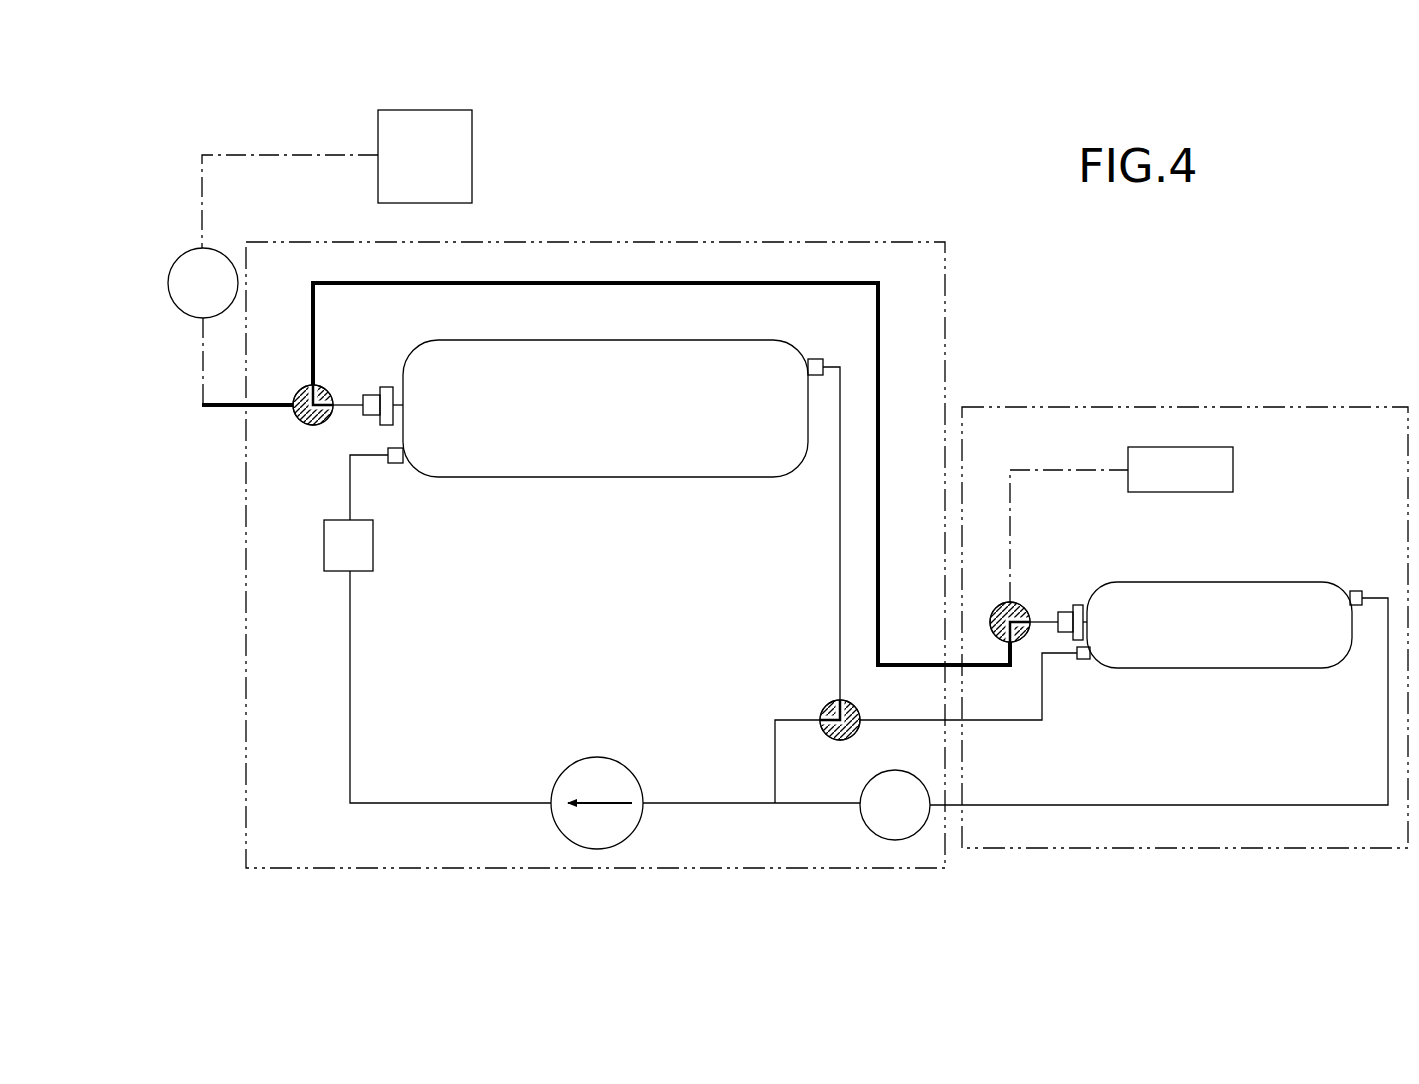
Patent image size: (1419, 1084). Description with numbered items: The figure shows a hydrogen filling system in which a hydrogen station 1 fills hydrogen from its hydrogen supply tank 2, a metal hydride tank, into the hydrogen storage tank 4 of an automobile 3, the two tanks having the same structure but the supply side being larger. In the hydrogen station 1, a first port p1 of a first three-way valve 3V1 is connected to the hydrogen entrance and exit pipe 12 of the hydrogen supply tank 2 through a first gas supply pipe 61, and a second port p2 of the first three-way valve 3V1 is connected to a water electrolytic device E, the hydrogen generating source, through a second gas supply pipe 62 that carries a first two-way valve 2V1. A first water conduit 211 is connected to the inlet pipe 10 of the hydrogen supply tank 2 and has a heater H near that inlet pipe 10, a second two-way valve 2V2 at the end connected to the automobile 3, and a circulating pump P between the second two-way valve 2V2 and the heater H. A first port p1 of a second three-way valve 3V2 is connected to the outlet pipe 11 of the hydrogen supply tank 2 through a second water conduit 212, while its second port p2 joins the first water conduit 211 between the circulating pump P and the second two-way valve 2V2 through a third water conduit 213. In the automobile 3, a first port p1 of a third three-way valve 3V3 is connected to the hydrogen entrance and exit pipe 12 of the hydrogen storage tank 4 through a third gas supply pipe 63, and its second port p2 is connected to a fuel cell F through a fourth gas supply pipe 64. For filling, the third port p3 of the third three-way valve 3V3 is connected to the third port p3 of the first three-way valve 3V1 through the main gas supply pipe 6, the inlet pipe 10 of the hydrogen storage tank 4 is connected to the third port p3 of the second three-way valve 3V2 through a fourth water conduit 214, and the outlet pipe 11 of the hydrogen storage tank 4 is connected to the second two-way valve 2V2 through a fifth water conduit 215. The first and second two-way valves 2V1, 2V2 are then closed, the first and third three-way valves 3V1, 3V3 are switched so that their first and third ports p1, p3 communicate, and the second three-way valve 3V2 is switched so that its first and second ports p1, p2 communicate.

The hydrogen station 1 is at (733, 238).
The hydrogen supply tank 2 is at (637, 480).
The automobile 3 is at (1287, 403).
The hydrogen storage tank 4 is at (1237, 580).
The main gas supply pipe 6 is at (668, 284).
The first gas supply pipe 61 is at (340, 404).
The second gas supply pipe 62 is at (218, 412).
The third gas supply pipe 63 is at (1044, 630).
The fourth gas supply pipe 64 is at (1068, 470).
The inlet pipe 10 is at (397, 465).
The outlet pipe 11 is at (815, 357).
The hydrogen entrance and exit pipe 12 is at (385, 386).
The first water conduit 211 is at (477, 802).
The second water conduit 212 is at (837, 540).
The third water conduit 213 is at (773, 760).
The fourth water conduit 214 is at (975, 724).
The fifth water conduit 215 is at (1203, 803).
The first two-way valve 2V1 is at (203, 326).
The second two-way valve 2V2 is at (895, 805).
The first three-way valve 3V1 is at (300, 390).
The second three-way valve 3V2 is at (825, 737).
The third three-way valve 3V3 is at (1017, 603).
The first port p1 is at (322, 425).
The second port p2 is at (295, 413).
The third port p3 is at (320, 386).
The water electrolytic device E is at (337, 179).
The fuel cell F is at (1180, 469).
The heater H is at (348, 545).
The circulating pump P is at (705, 803).